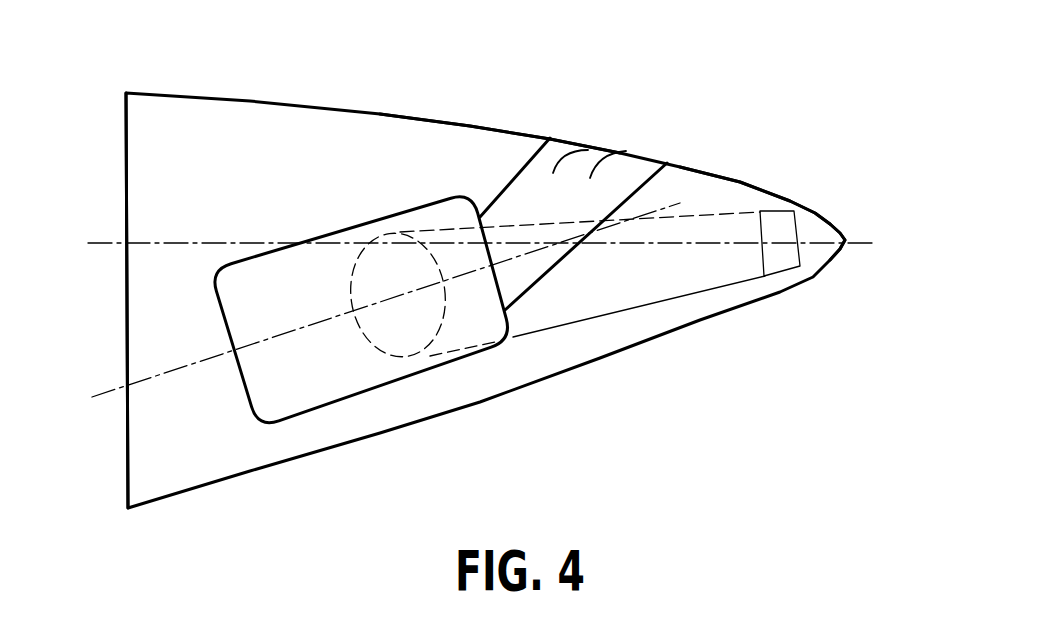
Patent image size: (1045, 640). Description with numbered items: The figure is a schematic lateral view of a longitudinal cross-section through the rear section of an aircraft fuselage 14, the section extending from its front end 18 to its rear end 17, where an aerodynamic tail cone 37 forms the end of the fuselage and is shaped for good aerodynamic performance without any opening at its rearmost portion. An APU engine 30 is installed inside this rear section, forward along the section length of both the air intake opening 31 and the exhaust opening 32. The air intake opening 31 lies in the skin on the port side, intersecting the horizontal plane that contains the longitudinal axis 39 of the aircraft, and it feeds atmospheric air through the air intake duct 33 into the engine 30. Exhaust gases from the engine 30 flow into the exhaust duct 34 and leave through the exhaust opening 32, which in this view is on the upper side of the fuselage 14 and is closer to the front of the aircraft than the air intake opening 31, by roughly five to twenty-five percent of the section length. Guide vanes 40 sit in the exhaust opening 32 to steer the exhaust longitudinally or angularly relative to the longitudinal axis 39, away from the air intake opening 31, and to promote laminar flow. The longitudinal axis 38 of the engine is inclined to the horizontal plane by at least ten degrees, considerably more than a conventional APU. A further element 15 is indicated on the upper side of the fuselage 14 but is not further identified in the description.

The fuselage 14 is at (343, 107).
The upper surface 15 is at (468, 125).
The rear end 17 is at (846, 240).
The front end 18 is at (122, 205).
The engine 30 is at (318, 397).
The air intake opening 31 is at (787, 228).
The exhaust opening 32 is at (613, 152).
The air intake duct 33 is at (577, 312).
The exhaust duct 34 is at (537, 182).
The aerodynamic tail cone 37 is at (767, 188).
The longitudinal axis of the engine 38 is at (170, 370).
The longitudinal axis 39 is at (213, 238).
The guide vanes 40 is at (615, 165).